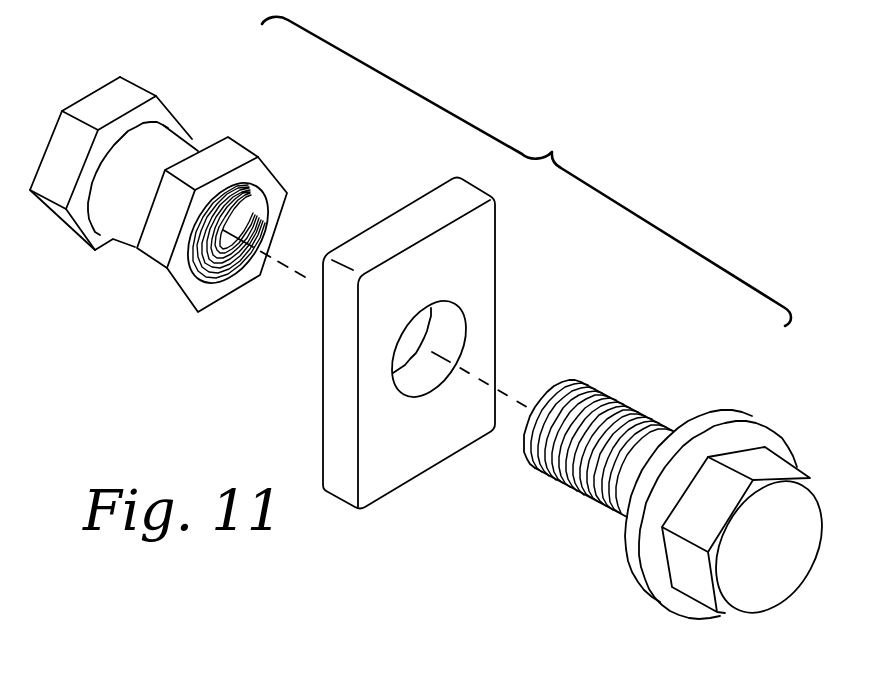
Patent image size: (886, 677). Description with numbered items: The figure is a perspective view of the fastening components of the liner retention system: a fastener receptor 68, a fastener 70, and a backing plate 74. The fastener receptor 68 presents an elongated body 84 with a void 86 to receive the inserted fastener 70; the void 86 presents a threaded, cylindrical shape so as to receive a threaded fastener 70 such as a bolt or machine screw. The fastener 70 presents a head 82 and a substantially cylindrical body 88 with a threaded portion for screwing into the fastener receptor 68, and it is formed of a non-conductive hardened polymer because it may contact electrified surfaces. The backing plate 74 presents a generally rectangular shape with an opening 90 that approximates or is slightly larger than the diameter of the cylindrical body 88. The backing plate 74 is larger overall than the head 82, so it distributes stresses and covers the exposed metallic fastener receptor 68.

The fastener receptor 68 is at (167, 180).
The fastener 70 is at (683, 493).
The backing plate 74 is at (445, 345).
The head 82 is at (773, 580).
The elongated body 84 is at (111, 216).
The void 86 is at (224, 241).
The cylindrical body 88 is at (587, 478).
The opening 90 is at (432, 390).